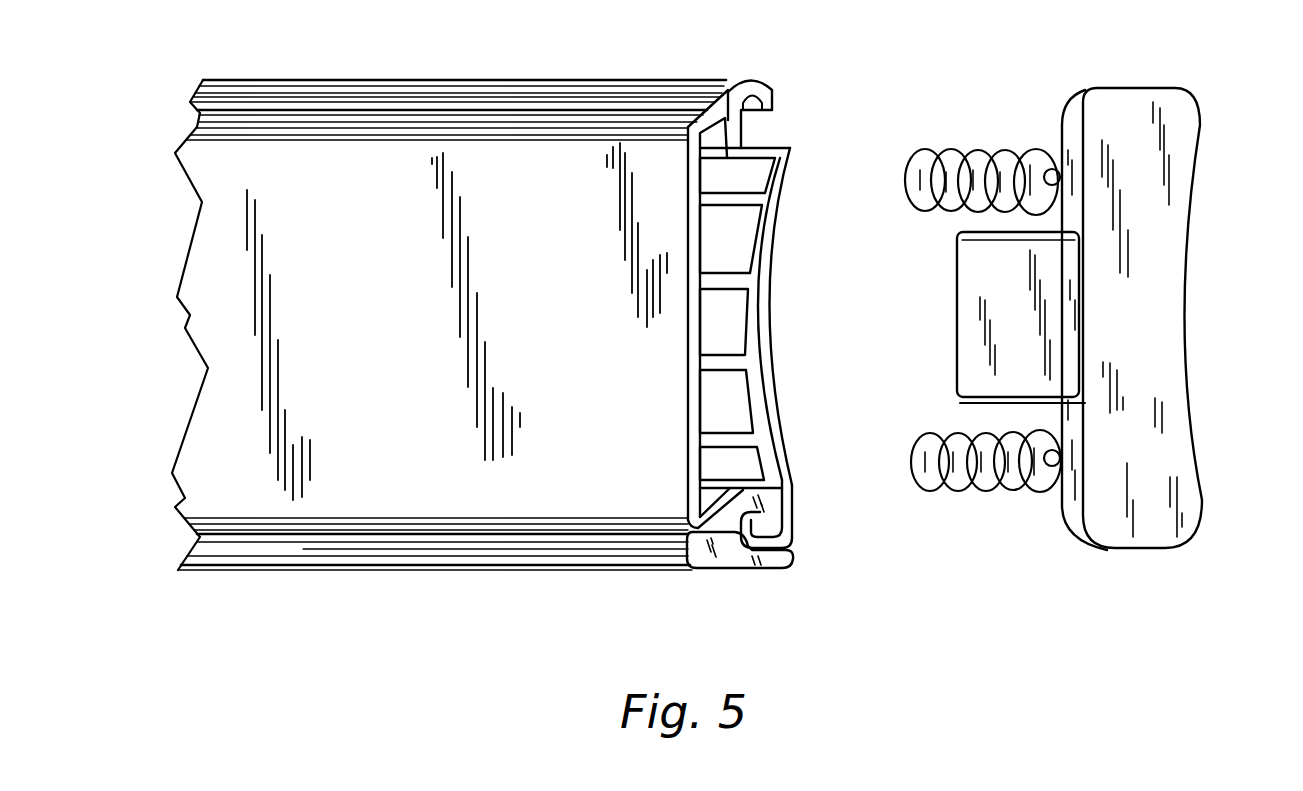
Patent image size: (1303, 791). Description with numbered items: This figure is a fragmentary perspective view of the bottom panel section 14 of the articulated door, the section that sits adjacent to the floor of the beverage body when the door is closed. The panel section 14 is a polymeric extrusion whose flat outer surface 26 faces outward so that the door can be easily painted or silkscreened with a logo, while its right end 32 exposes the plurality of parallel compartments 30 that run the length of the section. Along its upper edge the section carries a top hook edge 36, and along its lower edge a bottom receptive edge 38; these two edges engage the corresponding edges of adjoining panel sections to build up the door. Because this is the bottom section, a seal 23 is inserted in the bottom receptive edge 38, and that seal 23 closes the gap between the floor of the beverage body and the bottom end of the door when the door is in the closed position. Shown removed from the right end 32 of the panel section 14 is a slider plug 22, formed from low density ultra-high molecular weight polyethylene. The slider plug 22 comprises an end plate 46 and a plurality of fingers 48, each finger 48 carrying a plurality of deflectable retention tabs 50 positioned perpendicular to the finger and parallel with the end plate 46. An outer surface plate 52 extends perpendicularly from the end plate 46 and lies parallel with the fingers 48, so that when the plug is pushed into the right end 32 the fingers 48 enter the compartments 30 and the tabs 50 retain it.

The panel section 14 is at (158, 214).
The slider plug 22 is at (1205, 552).
The seal 23 is at (728, 552).
The flat outer surface 26 is at (540, 492).
The parallel compartments 30 is at (735, 181).
The right end 32 is at (700, 343).
The top hook edge 36 is at (757, 79).
The bottom receptive edge 38 is at (784, 513).
The end plate 46 is at (1148, 330).
The fingers 48 is at (1052, 170).
The deflectable retention tabs 50 is at (1033, 150).
The outer surface plate 52 is at (993, 283).